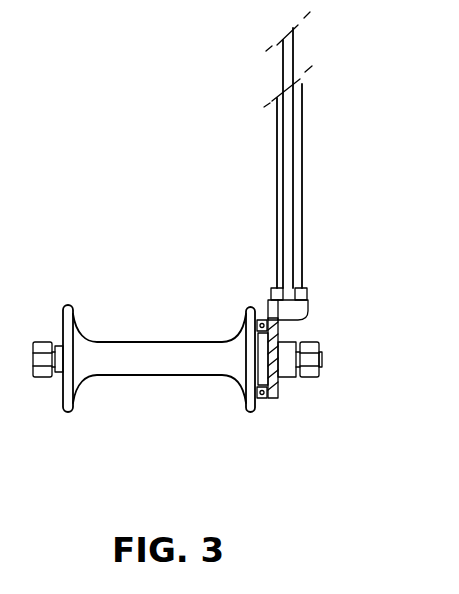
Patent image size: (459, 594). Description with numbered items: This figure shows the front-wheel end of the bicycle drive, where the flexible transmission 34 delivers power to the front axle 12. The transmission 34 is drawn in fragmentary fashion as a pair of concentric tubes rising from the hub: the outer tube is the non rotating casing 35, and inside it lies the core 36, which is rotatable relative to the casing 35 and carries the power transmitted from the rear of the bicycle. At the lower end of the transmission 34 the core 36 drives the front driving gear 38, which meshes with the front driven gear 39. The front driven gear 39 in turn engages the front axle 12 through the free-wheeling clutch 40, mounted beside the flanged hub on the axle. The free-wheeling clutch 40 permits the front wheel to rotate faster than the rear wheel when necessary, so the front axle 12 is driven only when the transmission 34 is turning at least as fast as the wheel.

The front axle 12 is at (154, 356).
The flexible transmission 34 is at (240, 170).
The non rotating casing 35 is at (302, 108).
The core 36 is at (293, 54).
The front driving gear 38 is at (299, 309).
The front driven gear 39 is at (280, 386).
The free-wheeling clutch 40 is at (266, 401).